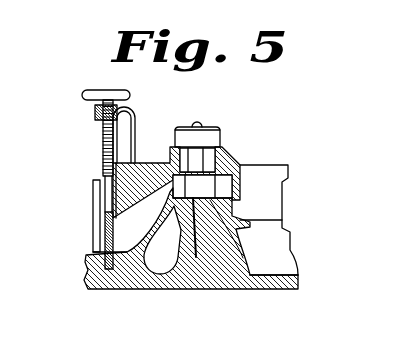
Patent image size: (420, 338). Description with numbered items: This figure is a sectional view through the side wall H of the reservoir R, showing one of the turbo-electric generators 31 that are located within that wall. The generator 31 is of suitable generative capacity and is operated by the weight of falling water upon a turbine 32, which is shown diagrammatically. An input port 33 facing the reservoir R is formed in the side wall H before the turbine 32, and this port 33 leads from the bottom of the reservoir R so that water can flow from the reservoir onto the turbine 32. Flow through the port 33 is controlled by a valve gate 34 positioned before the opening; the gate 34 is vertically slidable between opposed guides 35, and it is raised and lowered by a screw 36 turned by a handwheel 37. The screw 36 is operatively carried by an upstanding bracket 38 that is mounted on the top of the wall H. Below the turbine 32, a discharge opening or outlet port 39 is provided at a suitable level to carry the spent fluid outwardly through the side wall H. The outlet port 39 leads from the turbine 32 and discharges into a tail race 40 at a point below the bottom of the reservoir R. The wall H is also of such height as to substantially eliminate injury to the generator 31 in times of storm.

The turbo-electric generator 31 is at (206, 137).
The turbine 32 is at (244, 222).
The input port 33 is at (128, 223).
The valve gate 34 is at (107, 232).
The guides 35 is at (97, 183).
The screw 36 is at (112, 138).
The handwheel 37 is at (87, 92).
The upstanding bracket 38 is at (128, 148).
The outlet port 39 is at (233, 220).
The tail race 40 is at (247, 263).
The side wall H is at (191, 262).
The reservoir R is at (87, 241).